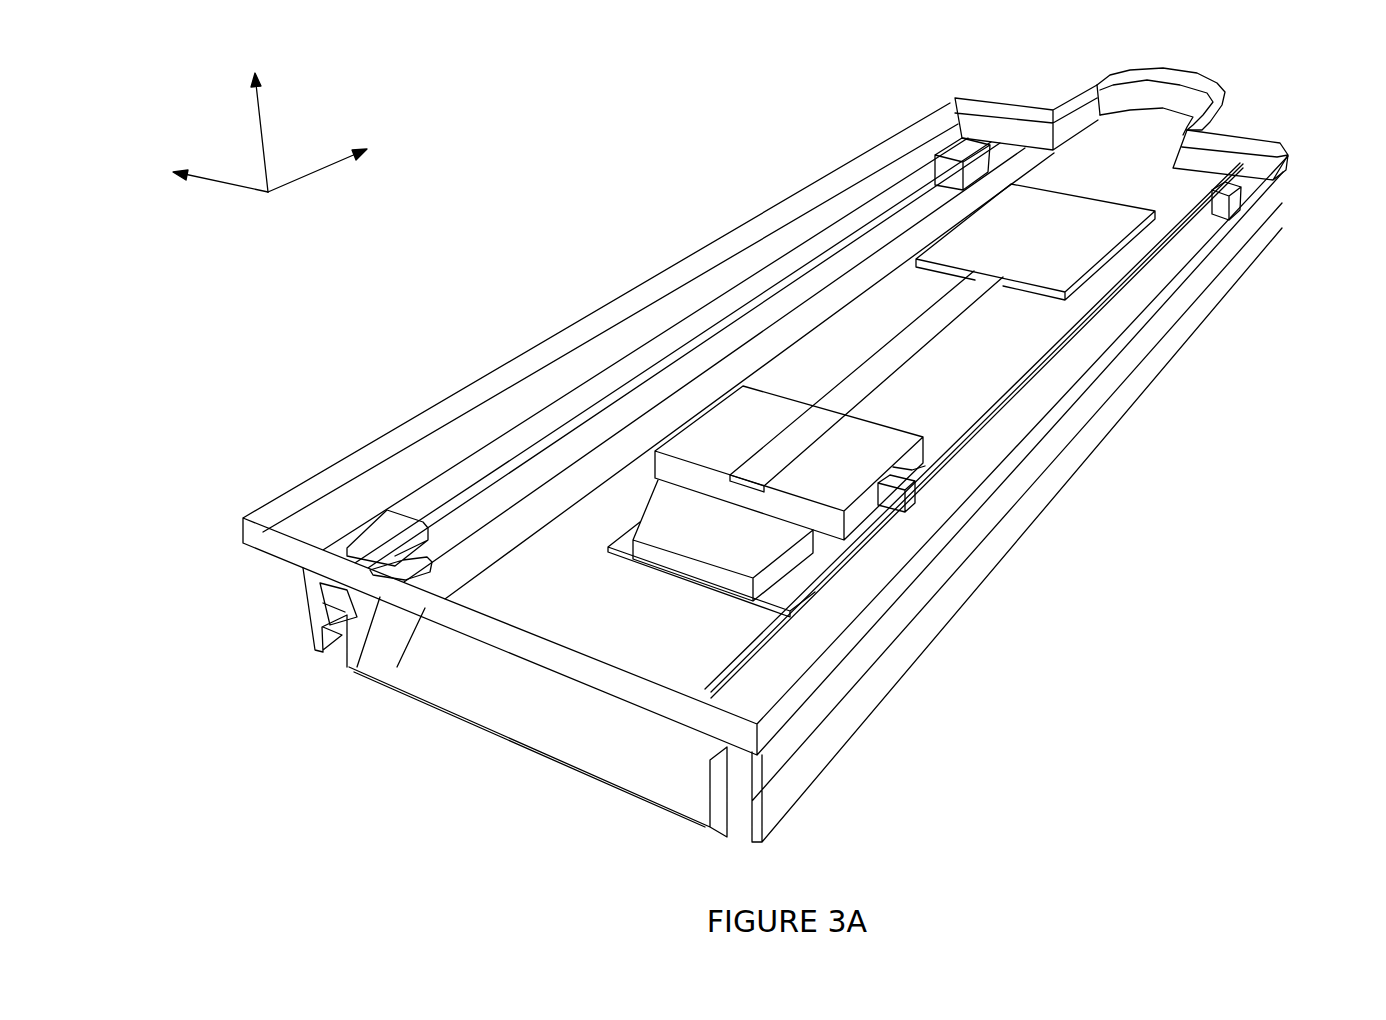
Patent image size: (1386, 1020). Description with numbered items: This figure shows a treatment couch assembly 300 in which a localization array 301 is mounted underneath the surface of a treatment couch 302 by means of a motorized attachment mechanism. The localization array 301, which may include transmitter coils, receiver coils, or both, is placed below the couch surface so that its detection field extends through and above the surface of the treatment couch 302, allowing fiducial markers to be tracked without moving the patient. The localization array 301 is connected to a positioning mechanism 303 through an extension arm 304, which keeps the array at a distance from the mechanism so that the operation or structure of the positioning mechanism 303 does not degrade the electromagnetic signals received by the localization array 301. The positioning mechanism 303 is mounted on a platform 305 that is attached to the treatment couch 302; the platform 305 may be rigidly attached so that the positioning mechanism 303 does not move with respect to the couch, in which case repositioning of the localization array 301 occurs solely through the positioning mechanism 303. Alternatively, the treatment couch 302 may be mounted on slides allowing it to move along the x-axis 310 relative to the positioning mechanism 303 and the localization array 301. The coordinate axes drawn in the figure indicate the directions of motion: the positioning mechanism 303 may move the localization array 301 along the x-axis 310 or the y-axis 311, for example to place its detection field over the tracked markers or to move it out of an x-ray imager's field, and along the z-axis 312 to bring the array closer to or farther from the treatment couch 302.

The treatment couch assembly 300 is at (722, 176).
The localization array 301 is at (1073, 243).
The treatment couch 302 is at (351, 461).
The positioning mechanism 303 is at (840, 470).
The extension arm 304 is at (930, 330).
The platform 305 is at (490, 735).
The x-axis 310 is at (350, 158).
The y-axis 311 is at (192, 167).
The z-axis 312 is at (255, 104).